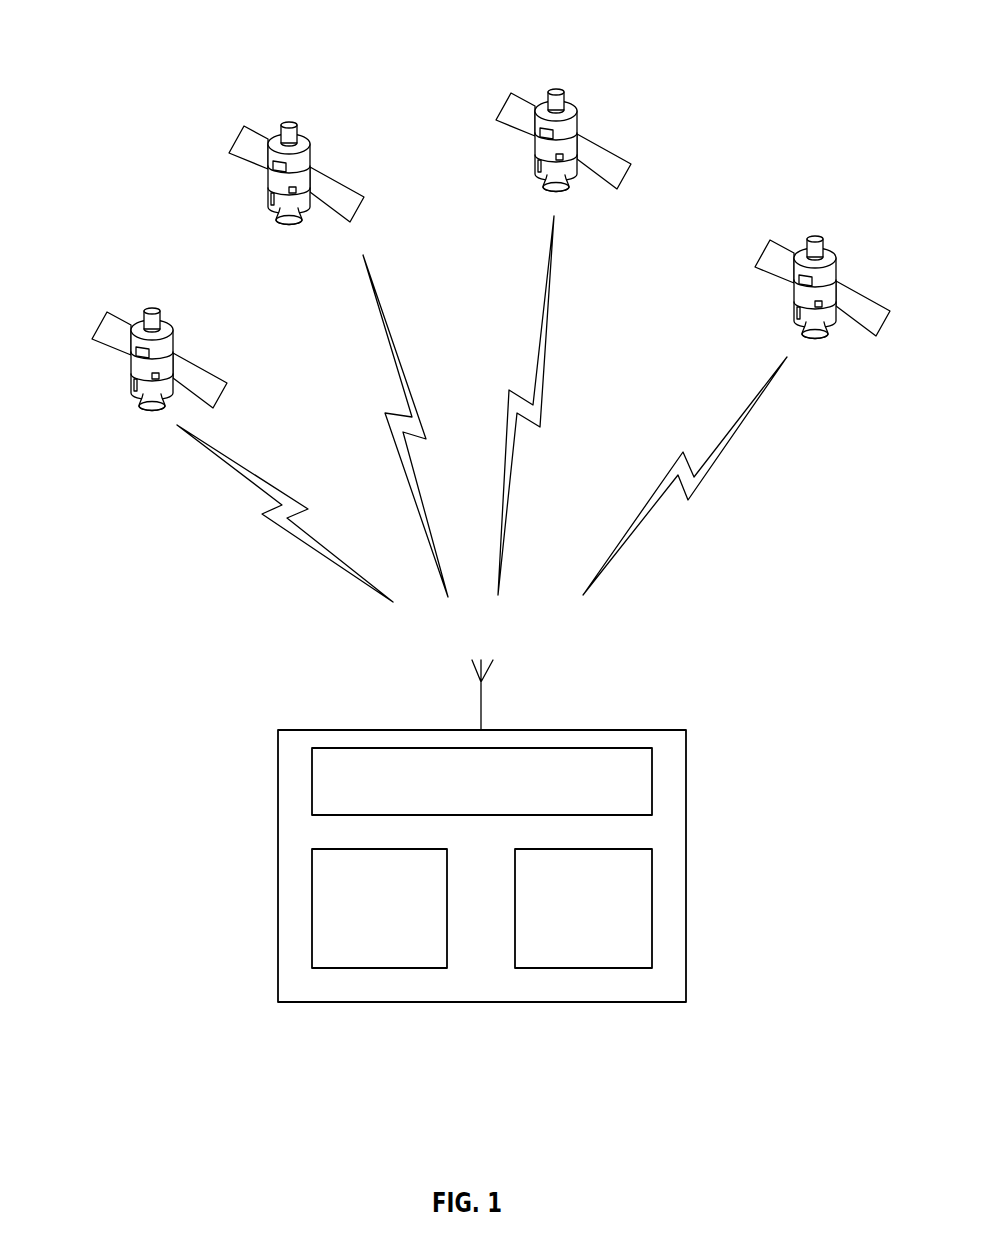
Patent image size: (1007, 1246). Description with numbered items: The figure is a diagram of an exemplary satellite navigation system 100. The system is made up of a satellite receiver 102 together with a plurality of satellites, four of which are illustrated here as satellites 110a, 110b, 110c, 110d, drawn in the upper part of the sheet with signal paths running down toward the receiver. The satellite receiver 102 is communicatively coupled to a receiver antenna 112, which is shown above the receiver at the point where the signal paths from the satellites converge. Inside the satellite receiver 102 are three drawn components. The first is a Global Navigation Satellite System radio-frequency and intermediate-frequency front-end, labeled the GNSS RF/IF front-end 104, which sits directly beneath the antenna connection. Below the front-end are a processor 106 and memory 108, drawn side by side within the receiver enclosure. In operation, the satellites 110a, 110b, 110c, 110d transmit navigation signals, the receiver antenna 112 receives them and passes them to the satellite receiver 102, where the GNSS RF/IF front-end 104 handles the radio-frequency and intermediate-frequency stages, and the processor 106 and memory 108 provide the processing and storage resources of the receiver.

The satellite navigation system 100 is at (55, 0).
The satellite receiver 102 is at (618, 730).
The GNSS RF/IF front-end 104 is at (430, 815).
The processor 106 is at (346, 849).
The memory 108 is at (566, 849).
The satellite 110a is at (175, 343).
The satellite 110b is at (268, 190).
The satellite 110c is at (535, 142).
The satellite 110d is at (794, 292).
The receiver antenna 112 is at (481, 692).